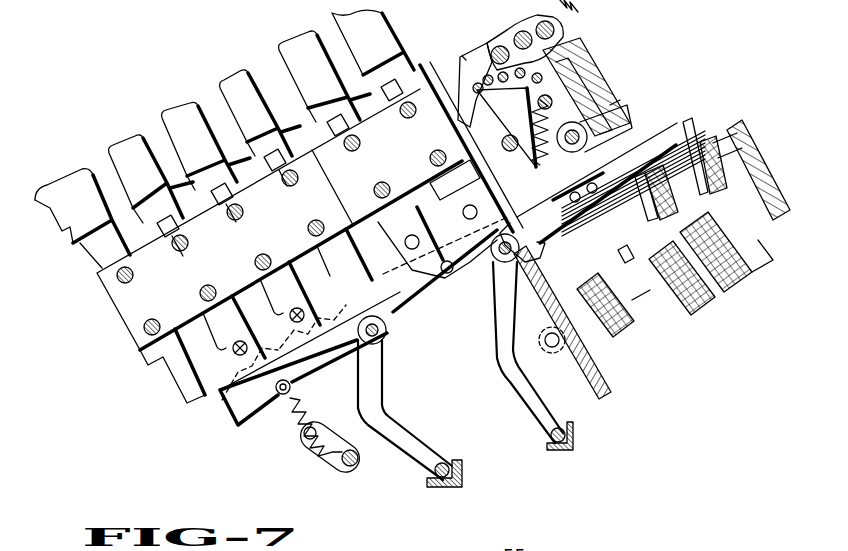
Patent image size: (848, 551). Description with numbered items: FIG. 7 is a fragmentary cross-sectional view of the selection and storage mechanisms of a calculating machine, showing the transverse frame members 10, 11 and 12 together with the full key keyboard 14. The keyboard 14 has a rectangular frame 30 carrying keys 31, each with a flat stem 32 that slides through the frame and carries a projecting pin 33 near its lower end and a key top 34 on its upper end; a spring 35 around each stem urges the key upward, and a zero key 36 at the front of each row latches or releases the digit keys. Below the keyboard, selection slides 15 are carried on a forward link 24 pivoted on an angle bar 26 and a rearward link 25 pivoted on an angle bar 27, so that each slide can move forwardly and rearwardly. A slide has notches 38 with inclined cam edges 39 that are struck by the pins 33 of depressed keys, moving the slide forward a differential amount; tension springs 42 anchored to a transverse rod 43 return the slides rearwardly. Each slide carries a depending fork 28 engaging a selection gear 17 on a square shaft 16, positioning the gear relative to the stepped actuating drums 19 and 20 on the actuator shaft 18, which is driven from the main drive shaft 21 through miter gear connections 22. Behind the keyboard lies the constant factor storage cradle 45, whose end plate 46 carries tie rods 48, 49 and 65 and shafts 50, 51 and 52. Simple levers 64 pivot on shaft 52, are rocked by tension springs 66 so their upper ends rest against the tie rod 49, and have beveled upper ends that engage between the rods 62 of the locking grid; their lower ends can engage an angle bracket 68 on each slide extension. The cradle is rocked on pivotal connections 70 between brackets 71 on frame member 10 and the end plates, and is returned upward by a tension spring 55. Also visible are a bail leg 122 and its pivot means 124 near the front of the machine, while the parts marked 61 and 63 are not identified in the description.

The transverse frame member 10 is at (592, 62).
The transverse frame plate 11 is at (590, 388).
The transverse frame member 12 is at (765, 140).
The full key keyboard 14 is at (129, 354).
The selection slides 15 is at (219, 416).
The square shafts 16 is at (598, 245).
The selection gears 17 is at (678, 216).
The actuator shafts 18 is at (760, 238).
The stepped actuating drum 19 is at (710, 305).
The stepped actuating drum 20 is at (627, 322).
The main drive shaft 21 is at (553, 353).
The miter gear connections 22 is at (558, 316).
The forwardly disposed supporting link 24 is at (412, 443).
The rearwardly disposed supporting link 25 is at (512, 374).
The transversely extending angle bar 26 is at (455, 482).
The angle bar 27 is at (567, 445).
The depending fork 28 is at (698, 135).
The rectangular frame 30 is at (122, 312).
The keys 31 is at (222, 90).
The flat stem 32 is at (172, 187).
The perpendicularly projecting pin 33 is at (236, 352).
The key top 34 is at (122, 140).
The spring 35 is at (158, 232).
The "0" key 36 is at (80, 243).
The notches 38 is at (448, 260).
The cam edges 39 is at (433, 255).
The tension springs 42 is at (292, 410).
The transverse rod 43 is at (350, 466).
The cradle 45 is at (457, 59).
The end plate 46 is at (578, 150).
The tie rod 48 is at (560, 30).
The tie rod 49 is at (495, 120).
The shaft 50 is at (521, 35).
The shaft 51 is at (490, 52).
The shaft 52 is at (478, 190).
The tension spring 55 is at (547, 30).
The edge of plate 61 is at (500, 38).
The rods 62 is at (486, 78).
The upper plate 63 is at (420, 128).
The simple levers 64 is at (532, 176).
The tie rod 65 is at (538, 105).
The tension springs 66 is at (598, 82).
The angle bracket 68 is at (580, 178).
The pivotal connections 70 is at (612, 108).
The brackets 71 is at (618, 126).
The bail leg 122 is at (330, 452).
The pivot means 124 is at (309, 440).